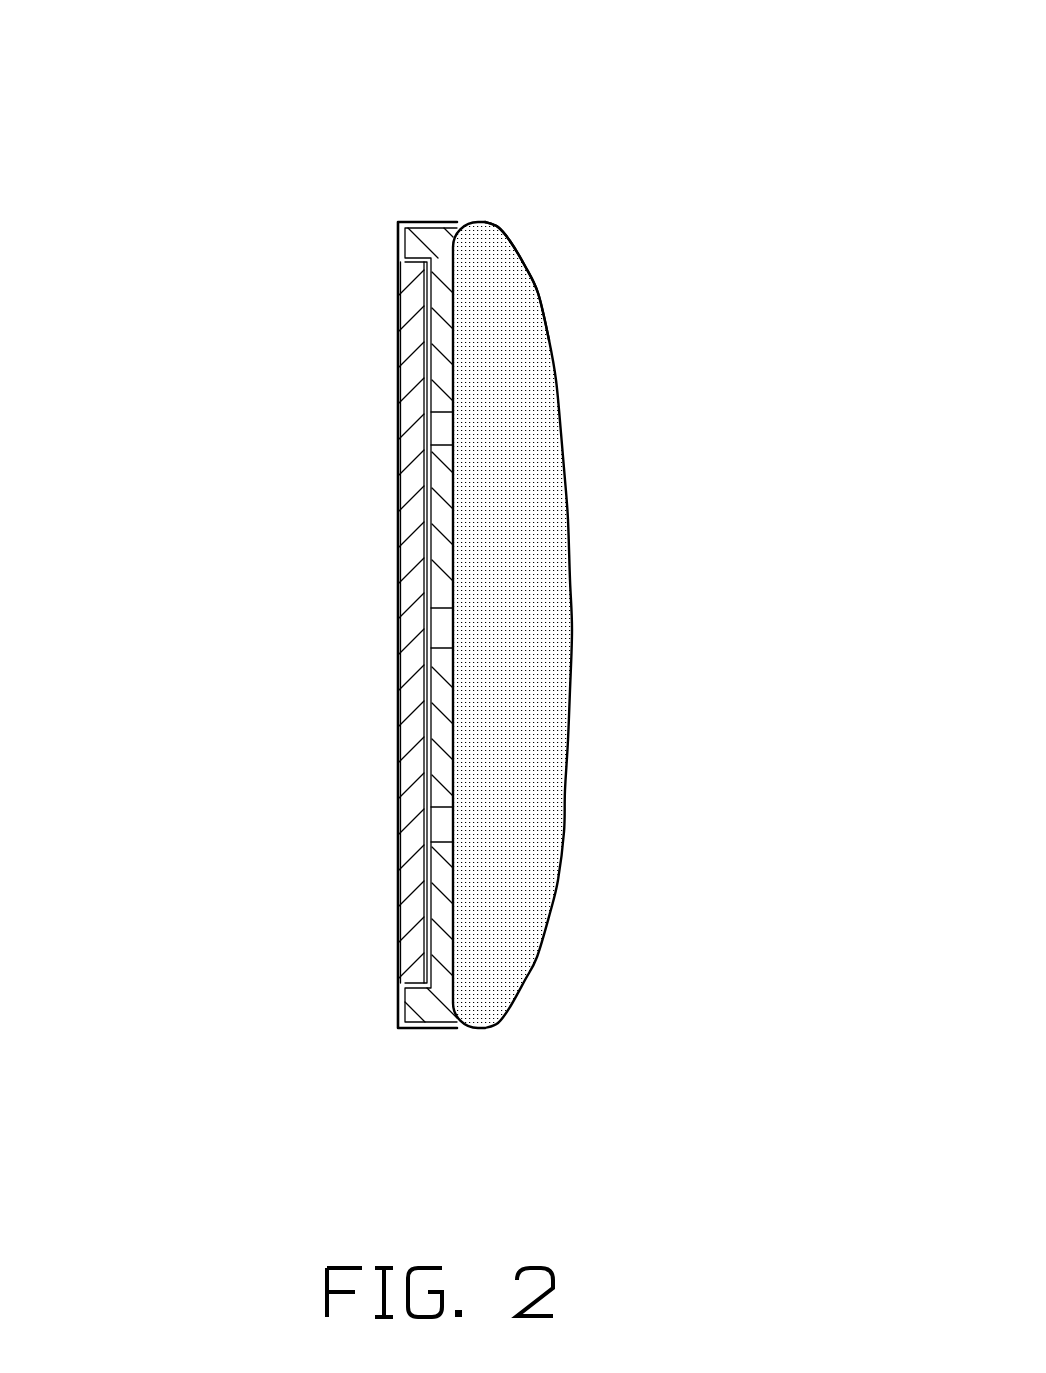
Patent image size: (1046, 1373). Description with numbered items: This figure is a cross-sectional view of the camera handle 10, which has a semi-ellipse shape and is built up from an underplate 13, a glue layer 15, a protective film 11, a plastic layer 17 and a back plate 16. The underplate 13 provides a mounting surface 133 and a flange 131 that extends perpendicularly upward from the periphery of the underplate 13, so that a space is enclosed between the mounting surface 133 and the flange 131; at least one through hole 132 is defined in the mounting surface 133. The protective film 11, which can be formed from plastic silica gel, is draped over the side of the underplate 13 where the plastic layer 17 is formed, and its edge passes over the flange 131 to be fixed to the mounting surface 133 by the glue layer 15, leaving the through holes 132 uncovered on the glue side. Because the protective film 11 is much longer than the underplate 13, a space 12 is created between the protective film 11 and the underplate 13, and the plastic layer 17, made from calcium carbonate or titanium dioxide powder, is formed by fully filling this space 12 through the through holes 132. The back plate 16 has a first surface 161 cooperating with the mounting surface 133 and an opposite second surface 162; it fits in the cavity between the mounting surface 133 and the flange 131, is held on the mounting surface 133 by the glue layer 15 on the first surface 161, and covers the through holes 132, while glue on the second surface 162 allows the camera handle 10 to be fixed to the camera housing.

The camera handle 10 is at (485, 37).
The protective film 11 is at (538, 293).
The space 12 is at (520, 402).
The underplate 13 is at (442, 915).
The flange 131 is at (418, 1007).
The through hole 132 is at (438, 825).
The mounting surface 133 is at (420, 368).
The glue layer 15 is at (428, 222).
The back plate 16 is at (408, 520).
The first surface 161 is at (440, 434).
The second surface 162 is at (385, 680).
The plastic layer 17 is at (520, 605).